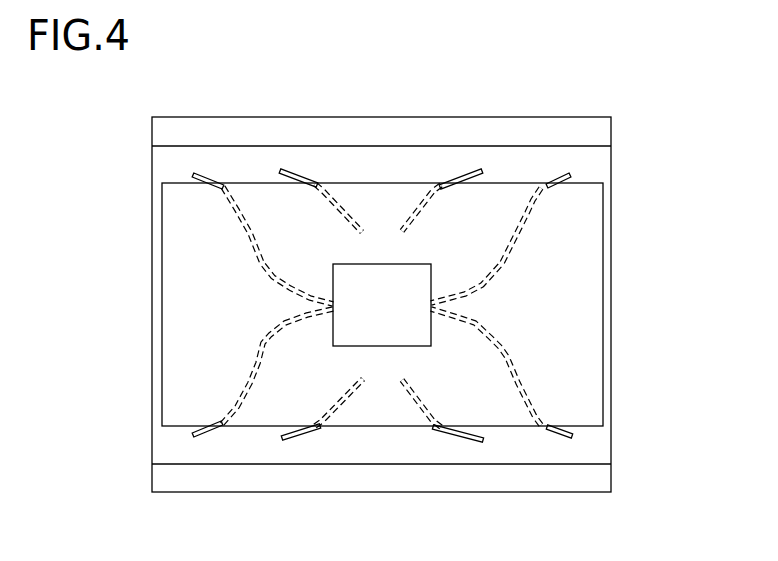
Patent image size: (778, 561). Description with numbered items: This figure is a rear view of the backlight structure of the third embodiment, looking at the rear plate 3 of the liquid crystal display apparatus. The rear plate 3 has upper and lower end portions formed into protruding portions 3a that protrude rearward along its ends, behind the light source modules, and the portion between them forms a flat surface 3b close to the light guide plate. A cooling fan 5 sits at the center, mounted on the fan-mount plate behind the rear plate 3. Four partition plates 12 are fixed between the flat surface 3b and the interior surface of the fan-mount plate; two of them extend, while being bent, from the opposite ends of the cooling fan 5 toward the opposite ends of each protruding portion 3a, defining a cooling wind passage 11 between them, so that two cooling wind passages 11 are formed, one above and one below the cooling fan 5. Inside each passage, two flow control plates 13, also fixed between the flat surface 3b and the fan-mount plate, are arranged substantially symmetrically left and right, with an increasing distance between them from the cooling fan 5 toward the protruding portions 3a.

The rear plate 3 is at (532, 115).
The protruding portions 3a is at (588, 134).
The flat surface 3b is at (590, 443).
The cooling fan 5 is at (387, 318).
The cooling wind passages 11 is at (295, 352).
The partition plates 12 is at (240, 208).
The flow control plates 13 is at (335, 183).